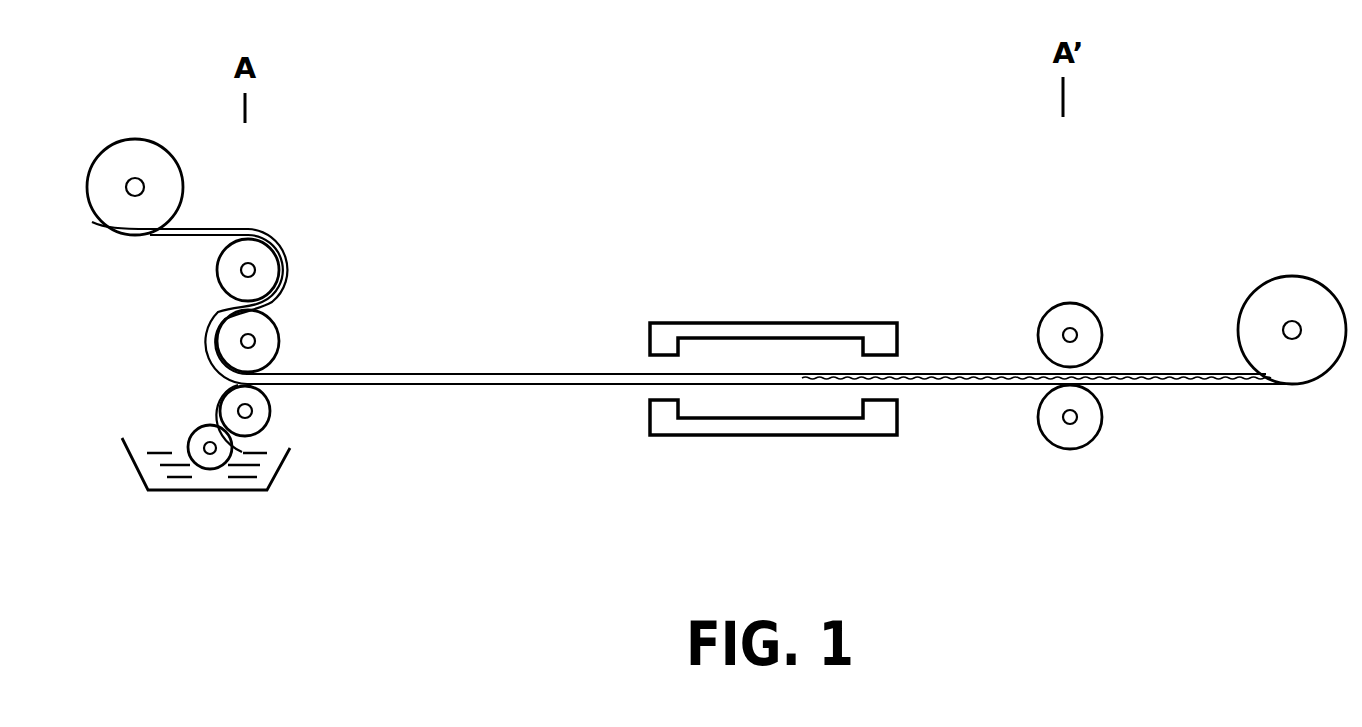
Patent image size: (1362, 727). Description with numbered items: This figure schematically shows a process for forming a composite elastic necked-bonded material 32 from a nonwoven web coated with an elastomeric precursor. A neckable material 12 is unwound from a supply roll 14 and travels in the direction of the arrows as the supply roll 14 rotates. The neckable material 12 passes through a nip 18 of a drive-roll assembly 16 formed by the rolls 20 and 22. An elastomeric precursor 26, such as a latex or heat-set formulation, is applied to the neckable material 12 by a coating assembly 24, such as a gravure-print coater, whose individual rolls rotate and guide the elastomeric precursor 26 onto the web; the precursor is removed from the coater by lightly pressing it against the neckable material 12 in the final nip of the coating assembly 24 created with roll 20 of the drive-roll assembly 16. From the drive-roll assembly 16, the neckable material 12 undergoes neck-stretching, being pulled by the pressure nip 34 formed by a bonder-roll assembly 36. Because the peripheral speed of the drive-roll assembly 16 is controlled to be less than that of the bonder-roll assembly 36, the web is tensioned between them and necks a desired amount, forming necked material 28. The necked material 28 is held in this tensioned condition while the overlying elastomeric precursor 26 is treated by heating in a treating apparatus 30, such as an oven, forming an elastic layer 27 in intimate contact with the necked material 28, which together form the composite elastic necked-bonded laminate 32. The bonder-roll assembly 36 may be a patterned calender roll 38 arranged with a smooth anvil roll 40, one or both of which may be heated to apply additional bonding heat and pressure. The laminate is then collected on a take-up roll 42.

The neckable material 12 is at (65, 203).
The supply roll 14 is at (132, 138).
The drive-roll assembly 16 is at (192, 311).
The nip 18 is at (288, 306).
The roll 20 is at (283, 337).
The roll 22 is at (216, 262).
The coating assembly 24 is at (183, 413).
The elastomeric precursor 26 is at (262, 450).
The elastic layer 27 is at (945, 385).
The necked material 28 is at (545, 372).
The treating apparatus 30 is at (770, 322).
The composite elastic necked-bonded material 32 is at (985, 386).
The pressure nip 34 is at (1032, 354).
The bonder-roll assembly 36 is at (1119, 284).
The calender roll 38 is at (1068, 304).
The anvil roll 40 is at (1101, 420).
The take-up roll 42 is at (1302, 277).